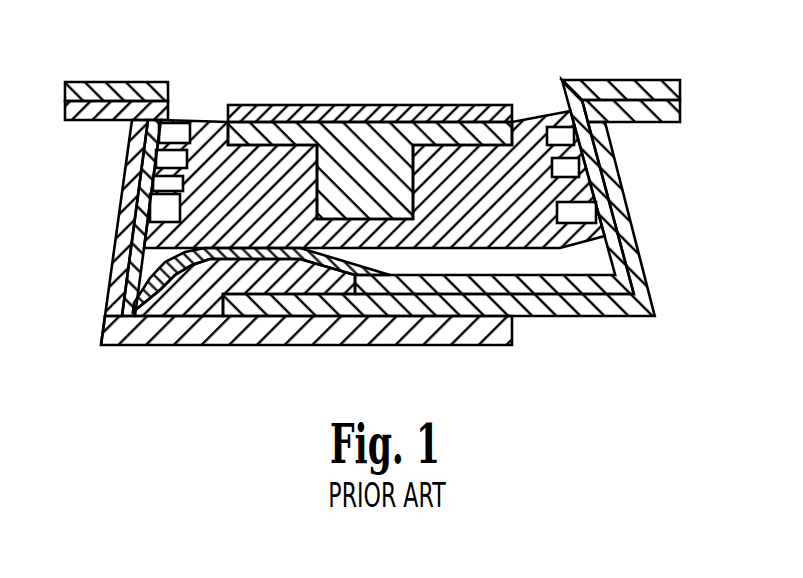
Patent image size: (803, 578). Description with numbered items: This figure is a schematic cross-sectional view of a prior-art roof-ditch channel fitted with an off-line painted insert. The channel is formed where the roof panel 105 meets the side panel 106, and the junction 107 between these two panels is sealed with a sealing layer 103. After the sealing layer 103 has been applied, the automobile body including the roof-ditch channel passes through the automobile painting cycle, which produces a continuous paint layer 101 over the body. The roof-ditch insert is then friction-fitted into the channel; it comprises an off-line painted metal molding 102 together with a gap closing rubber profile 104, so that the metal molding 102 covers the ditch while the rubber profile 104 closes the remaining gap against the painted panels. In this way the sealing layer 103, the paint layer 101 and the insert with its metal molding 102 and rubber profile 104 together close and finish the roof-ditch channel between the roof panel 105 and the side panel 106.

The paint layer 101 is at (358, 108).
The metal molding 102 is at (387, 147).
The sealing layer 103 is at (186, 302).
The gap closing rubber profile 104 is at (205, 170).
The roof panel 105 is at (118, 247).
The side panel 106 is at (585, 305).
The junction 107 is at (247, 300).